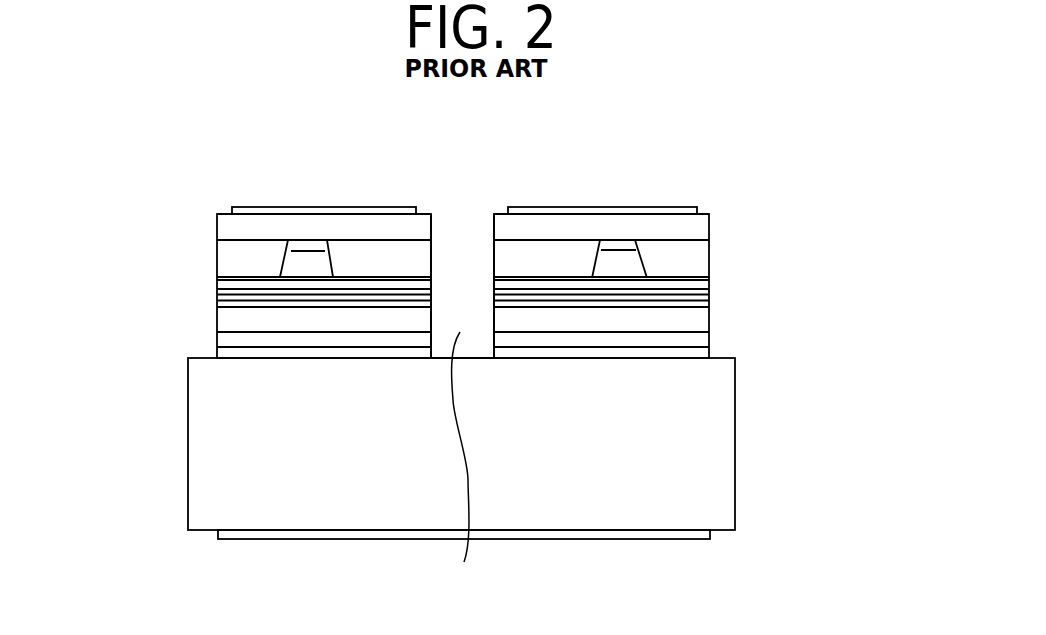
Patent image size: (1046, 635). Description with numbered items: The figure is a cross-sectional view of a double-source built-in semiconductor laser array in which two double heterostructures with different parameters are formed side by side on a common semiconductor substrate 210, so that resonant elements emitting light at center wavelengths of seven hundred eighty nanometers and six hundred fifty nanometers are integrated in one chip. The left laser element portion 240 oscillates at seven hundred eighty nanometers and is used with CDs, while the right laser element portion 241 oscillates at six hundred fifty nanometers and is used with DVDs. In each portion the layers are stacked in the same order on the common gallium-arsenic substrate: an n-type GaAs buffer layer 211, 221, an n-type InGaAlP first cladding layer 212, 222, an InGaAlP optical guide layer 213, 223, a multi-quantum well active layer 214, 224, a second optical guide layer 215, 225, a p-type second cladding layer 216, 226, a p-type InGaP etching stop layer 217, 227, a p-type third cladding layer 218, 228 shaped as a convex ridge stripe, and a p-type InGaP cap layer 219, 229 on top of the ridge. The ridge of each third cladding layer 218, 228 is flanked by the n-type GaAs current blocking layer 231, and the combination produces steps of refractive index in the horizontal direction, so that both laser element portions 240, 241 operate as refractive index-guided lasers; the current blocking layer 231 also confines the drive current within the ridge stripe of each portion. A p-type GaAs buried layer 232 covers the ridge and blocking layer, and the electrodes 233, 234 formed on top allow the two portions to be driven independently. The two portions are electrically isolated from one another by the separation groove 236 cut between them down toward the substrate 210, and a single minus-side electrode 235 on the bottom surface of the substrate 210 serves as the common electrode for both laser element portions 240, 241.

The substrate 210 is at (735, 492).
The n-type GaAs buffer layer 211 is at (217, 343).
The first cladding layer 212 is at (217, 322).
The optical guide layer 213 is at (217, 306).
The multi-quantum well active layer 214 is at (217, 300).
The optical guide layer 215 is at (217, 292).
The second cladding layer 216 is at (217, 287).
The etching stop layer 217 is at (217, 278).
The third cladding layer 218 is at (302, 267).
The cap layer 219 is at (307, 243).
The n-type GaAs buffer layer 221 is at (712, 343).
The first cladding layer 222 is at (712, 324).
The optical guide layer 223 is at (712, 309).
The multi-quantum well active layer 224 is at (712, 301).
The optical guide layer 225 is at (712, 291).
The second cladding layer 226 is at (712, 285).
The etching stop layer 227 is at (712, 277).
The third cladding layer 228 is at (623, 270).
The cap layer 229 is at (618, 245).
The current blocking layer 231 is at (415, 260).
The buried layer 232 is at (370, 225).
The electrode 233 is at (320, 207).
The electrode 234 is at (588, 208).
The minus-side electrode 235 is at (645, 540).
The separation groove 236 is at (455, 468).
The laser element portion 240 is at (324, 331).
The laser element portion 241 is at (601, 331).